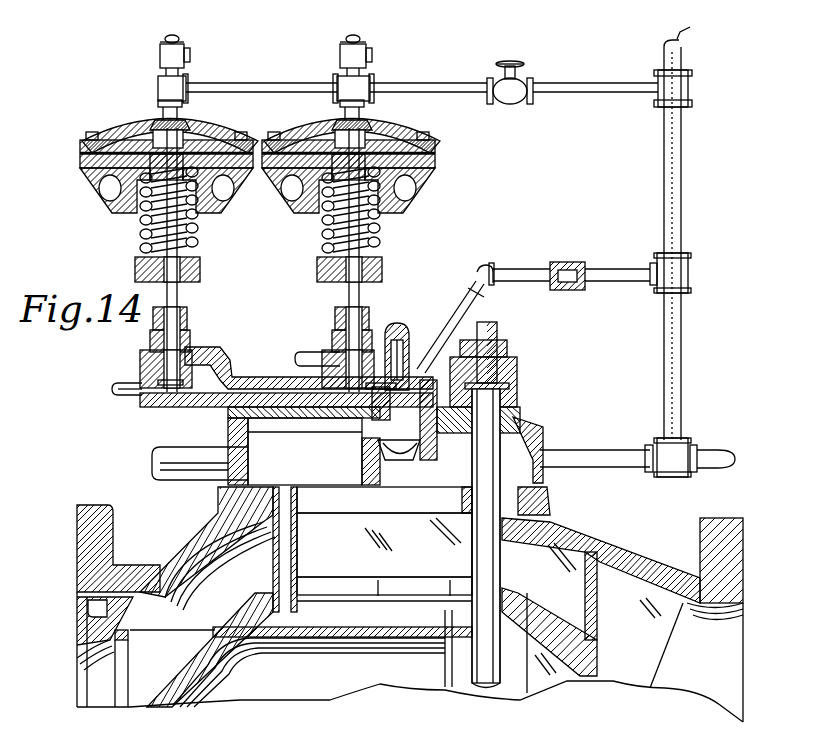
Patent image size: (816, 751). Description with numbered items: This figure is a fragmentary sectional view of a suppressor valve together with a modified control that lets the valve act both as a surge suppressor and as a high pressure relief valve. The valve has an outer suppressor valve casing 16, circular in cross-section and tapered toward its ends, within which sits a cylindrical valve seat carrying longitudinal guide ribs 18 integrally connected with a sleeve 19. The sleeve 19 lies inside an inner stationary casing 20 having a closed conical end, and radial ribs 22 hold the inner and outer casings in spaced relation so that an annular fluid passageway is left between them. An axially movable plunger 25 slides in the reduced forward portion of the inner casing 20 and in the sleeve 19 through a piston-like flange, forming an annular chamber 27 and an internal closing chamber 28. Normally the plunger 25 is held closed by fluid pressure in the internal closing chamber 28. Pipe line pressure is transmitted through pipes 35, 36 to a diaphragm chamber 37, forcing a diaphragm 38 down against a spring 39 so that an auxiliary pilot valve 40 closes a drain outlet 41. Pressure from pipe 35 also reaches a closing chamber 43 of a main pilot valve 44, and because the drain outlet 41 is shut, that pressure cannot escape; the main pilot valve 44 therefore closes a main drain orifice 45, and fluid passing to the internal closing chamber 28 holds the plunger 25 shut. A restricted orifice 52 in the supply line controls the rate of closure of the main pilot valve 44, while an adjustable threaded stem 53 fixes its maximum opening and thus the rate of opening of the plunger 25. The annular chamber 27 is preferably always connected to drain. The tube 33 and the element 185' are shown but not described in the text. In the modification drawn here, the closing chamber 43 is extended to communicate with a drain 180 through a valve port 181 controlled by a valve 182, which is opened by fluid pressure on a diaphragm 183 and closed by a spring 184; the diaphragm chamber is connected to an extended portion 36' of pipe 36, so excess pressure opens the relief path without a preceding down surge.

The suppressor valve casing 16 is at (410, 604).
The longitudinal guide ribs 18 is at (221, 602).
The sleeve 19 is at (358, 595).
The inner stationary casing 20 is at (451, 590).
The radial ribs 22 is at (658, 661).
The plunger 25 is at (216, 655).
The annular chamber 27 is at (379, 595).
The internal closing chamber 28 is at (205, 668).
The tube 33 is at (488, 559).
The pipe 35 is at (667, 62).
The pipe 36 is at (475, 77).
The extended portion of pipe 36' is at (408, 77).
The diaphragm chamber 37 is at (365, 137).
The diaphragm 38 is at (351, 247).
The spring 39 is at (322, 237).
The auxiliary pilot valve 40 is at (332, 347).
The drain outlet 41 is at (358, 380).
The closing chamber 43 is at (267, 416).
The main pilot valve 44 is at (378, 425).
The main drain orifice 45 is at (393, 458).
The restricted orifice 52 is at (564, 268).
The adjustable threaded stem 53 is at (402, 346).
The drain 180 is at (134, 382).
The valve port 181 is at (142, 356).
The valve 182 is at (185, 340).
The diaphragm 183 is at (169, 246).
The spring 184 is at (199, 236).
The diaphragm plate 185' is at (188, 124).